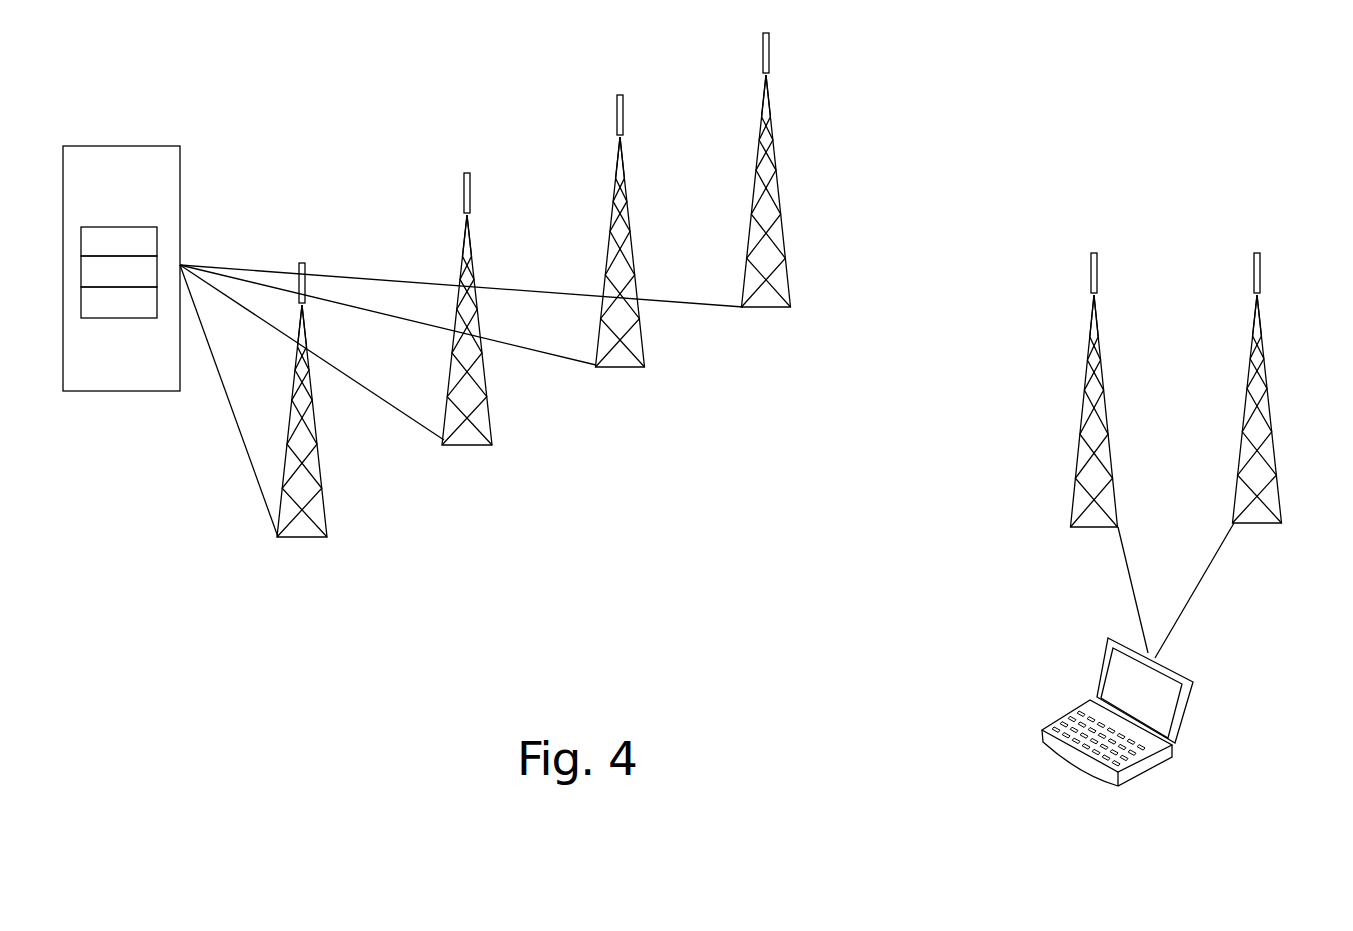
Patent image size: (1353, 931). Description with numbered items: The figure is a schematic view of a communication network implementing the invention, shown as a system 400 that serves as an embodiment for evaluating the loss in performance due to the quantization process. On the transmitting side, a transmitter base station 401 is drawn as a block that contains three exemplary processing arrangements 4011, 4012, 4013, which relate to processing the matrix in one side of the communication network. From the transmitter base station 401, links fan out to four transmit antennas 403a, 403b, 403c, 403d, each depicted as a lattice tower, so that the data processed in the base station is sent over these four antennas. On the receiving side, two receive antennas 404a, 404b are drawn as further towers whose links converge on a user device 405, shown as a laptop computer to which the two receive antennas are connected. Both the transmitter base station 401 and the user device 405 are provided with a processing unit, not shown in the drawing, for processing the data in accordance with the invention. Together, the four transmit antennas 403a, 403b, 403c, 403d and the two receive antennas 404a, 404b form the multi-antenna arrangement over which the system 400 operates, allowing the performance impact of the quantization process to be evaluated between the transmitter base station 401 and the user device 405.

The system 400 is at (1118, 133).
The transmitter base station 401 is at (121, 268).
The processing arrangement 4011 is at (119, 241).
The processing arrangement 4012 is at (119, 271).
The processing arrangement 4013 is at (119, 302).
The transmit antenna 403a is at (288, 527).
The transmit antenna 403b is at (452, 437).
The transmit antenna 403c is at (608, 353).
The transmit antenna 403d is at (752, 297).
The receive antenna 404a is at (1073, 516).
The receive antenna 404b is at (1283, 512).
The user device 405 is at (1173, 753).